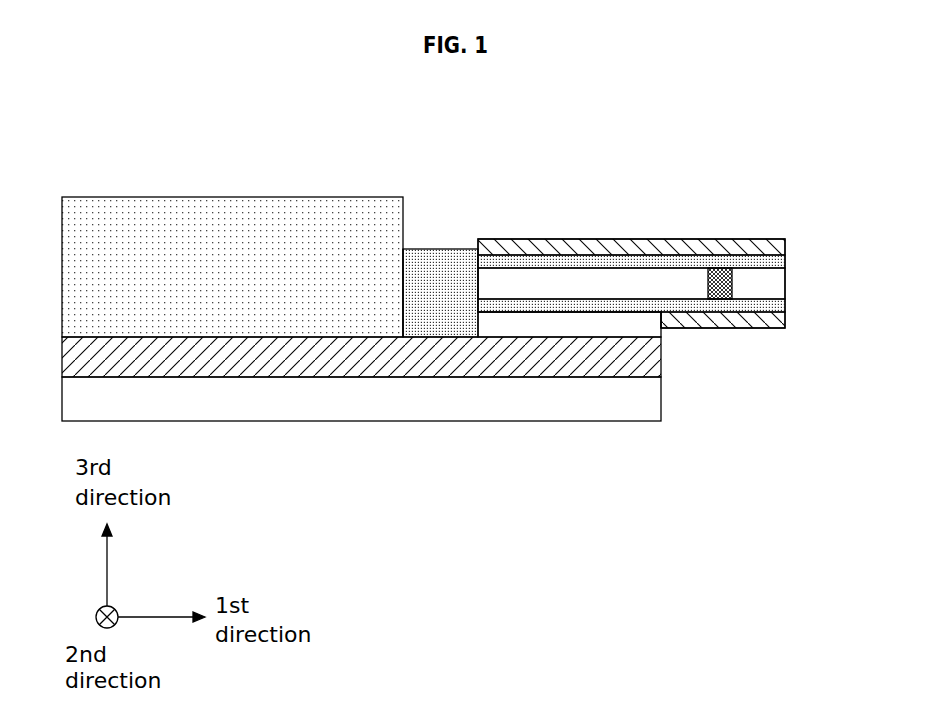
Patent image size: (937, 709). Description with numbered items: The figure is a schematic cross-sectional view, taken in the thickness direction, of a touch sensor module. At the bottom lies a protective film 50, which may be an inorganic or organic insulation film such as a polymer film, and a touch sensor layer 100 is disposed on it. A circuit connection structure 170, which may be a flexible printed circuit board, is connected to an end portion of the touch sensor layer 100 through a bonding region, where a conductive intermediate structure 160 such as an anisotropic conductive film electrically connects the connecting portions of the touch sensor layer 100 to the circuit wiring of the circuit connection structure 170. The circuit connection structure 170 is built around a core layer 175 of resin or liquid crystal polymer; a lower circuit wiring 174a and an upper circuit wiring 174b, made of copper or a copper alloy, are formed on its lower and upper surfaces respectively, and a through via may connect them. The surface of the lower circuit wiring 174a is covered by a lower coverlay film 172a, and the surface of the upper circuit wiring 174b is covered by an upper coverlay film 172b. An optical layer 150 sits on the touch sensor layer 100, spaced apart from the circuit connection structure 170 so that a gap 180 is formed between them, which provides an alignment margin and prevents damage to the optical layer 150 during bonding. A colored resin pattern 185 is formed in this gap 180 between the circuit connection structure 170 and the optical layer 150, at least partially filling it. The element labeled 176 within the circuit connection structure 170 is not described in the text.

The protective film 50 is at (431, 400).
The touch sensor layer 100 is at (253, 362).
The optical layer 150 is at (243, 207).
The conductive intermediate structure 160 is at (566, 328).
The circuit connection structure 170 is at (661, 281).
The lower coverlay film 172a is at (708, 318).
The upper coverlay film 172b is at (575, 258).
The lower circuit wiring 174a is at (763, 316).
The upper circuit wiring 174b is at (650, 252).
The core layer 175 is at (768, 282).
The support post 176 is at (724, 280).
The gap 180 is at (409, 264).
The colored resin pattern 185 is at (450, 262).